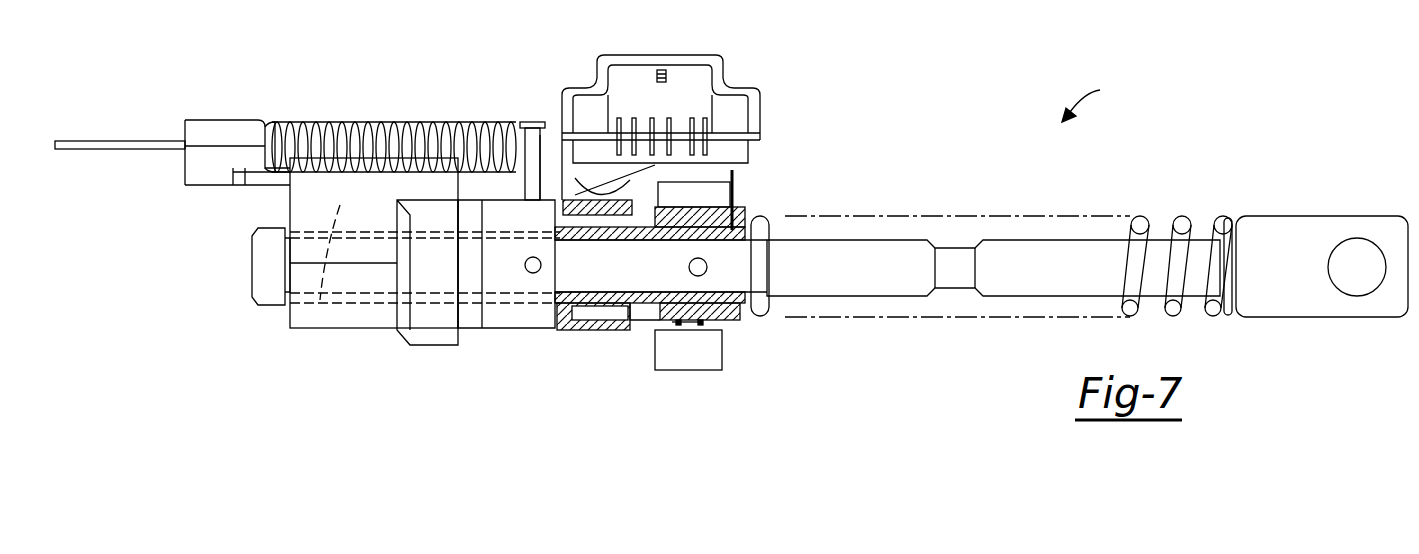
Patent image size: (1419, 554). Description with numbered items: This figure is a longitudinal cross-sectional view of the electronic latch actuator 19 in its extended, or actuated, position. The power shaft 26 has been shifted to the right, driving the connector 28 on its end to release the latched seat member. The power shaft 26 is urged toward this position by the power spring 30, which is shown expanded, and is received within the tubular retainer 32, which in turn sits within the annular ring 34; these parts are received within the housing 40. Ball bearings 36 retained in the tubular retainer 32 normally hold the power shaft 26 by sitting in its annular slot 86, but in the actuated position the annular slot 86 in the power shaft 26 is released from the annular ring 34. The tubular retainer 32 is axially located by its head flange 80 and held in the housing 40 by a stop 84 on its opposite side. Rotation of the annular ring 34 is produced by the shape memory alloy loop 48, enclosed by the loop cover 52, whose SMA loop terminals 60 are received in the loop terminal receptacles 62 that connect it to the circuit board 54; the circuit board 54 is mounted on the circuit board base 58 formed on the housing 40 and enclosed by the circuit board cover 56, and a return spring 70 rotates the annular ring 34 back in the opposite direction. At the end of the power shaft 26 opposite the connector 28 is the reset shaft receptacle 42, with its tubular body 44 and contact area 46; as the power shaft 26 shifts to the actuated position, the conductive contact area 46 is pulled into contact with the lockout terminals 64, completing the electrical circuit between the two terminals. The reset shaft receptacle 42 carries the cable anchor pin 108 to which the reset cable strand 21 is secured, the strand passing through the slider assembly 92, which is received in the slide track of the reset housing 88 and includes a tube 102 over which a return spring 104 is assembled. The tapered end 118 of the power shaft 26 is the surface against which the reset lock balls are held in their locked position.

The electronic latch actuator 19 is at (1098, 98).
The reset cable strand 21 is at (120, 140).
The power shaft 26 is at (1020, 248).
The connector 28 is at (1278, 216).
The power spring 30 is at (1140, 225).
The tubular retainer 32 is at (612, 318).
The annular ring 34 is at (672, 325).
The ball bearings 36 is at (707, 270).
The housing 40 is at (545, 120).
The reset shaft receptacle 42 is at (497, 318).
The tubular body 44 is at (338, 237).
The contact area 46 is at (555, 212).
The shape memory alloy loop 48 is at (700, 326).
The loop cover 52 is at (720, 360).
The circuit board 54 is at (690, 135).
The circuit board cover 56 is at (612, 55).
The circuit board base 58 is at (625, 135).
The SMA loop terminals 60 is at (680, 230).
The loop terminal receptacles 62 is at (720, 182).
The lockout terminals 64 is at (610, 240).
The return spring 70 is at (738, 325).
The head flange 80 is at (770, 215).
The stop 84 is at (565, 320).
The annular slot 86 is at (955, 255).
The reset housing 88 is at (333, 330).
The slider assembly 92 is at (215, 120).
The tube 102 is at (412, 125).
The return spring 104 is at (350, 125).
The cable anchor pin 108 is at (525, 188).
The tapered end 118 is at (275, 262).